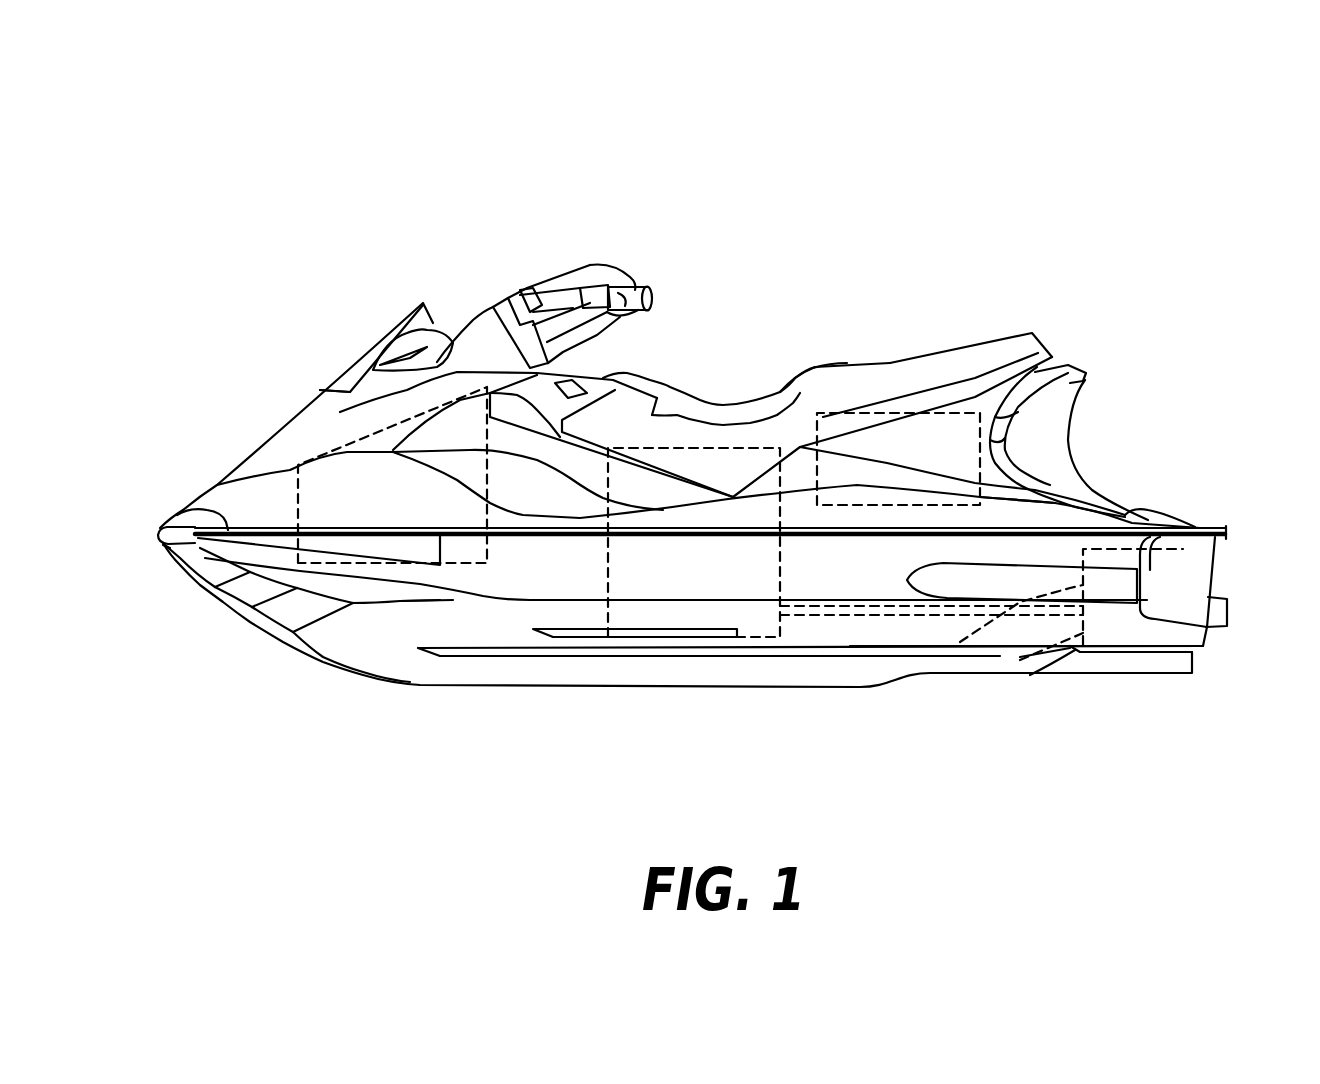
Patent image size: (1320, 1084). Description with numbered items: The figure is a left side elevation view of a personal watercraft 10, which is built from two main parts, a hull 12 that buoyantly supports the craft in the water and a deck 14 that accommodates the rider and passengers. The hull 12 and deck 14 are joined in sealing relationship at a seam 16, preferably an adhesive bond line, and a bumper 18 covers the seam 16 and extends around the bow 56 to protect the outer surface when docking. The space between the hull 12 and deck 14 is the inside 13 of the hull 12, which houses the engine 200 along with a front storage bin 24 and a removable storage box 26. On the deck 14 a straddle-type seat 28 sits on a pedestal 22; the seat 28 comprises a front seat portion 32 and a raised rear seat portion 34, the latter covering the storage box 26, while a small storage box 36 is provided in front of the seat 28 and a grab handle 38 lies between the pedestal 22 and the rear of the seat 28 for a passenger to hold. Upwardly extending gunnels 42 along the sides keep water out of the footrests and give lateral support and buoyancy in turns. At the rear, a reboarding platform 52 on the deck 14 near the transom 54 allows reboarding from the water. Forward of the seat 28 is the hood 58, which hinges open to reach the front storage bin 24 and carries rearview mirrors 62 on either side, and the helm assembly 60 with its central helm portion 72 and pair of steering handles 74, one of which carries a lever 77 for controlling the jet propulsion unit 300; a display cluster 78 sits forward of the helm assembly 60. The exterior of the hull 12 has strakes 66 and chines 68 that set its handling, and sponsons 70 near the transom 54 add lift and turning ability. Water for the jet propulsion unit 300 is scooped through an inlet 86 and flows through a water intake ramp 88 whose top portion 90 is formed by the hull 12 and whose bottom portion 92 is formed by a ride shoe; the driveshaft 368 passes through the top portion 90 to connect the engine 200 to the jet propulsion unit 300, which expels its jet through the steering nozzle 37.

The personal watercraft 10 is at (945, 175).
The hull 12 is at (295, 663).
The inside of the hull 13 is at (528, 566).
The deck 14 is at (217, 429).
The seam 16 is at (183, 510).
The bumper 18 is at (160, 546).
The pedestal 22 is at (800, 467).
The front storage bin 24 is at (403, 566).
The removable storage box 26 is at (917, 413).
The seat 28 is at (776, 280).
The front seat portion 32 is at (770, 397).
The rear seat portion 34 is at (888, 363).
The small storage box 36 is at (655, 380).
The steering nozzle 37 is at (1212, 630).
The grab handle 38 is at (1068, 364).
The gunnels 42 is at (1047, 517).
The reboarding platform 52 is at (1162, 517).
The transom 54 is at (1217, 562).
The bow 56 is at (194, 593).
The hood 58 is at (297, 415).
The helm assembly 60 is at (536, 244).
The rearview mirrors 62 is at (447, 330).
The strakes 66 is at (588, 640).
The chines 68 is at (453, 600).
The sponsons 70 is at (967, 587).
The central helm portion 72 is at (603, 266).
The steering handles 74 is at (641, 287).
The lever 77 is at (626, 304).
The display cluster 78 is at (433, 325).
The inlet 86 is at (977, 674).
The water intake ramp 88 is at (1086, 597).
The top portion of the water intake ramp 90 is at (960, 642).
The bottom portion of the water intake ramp 92 is at (1020, 660).
The engine 200 is at (767, 640).
The jet propulsion unit 300 is at (1118, 627).
The driveshaft 368 is at (847, 615).